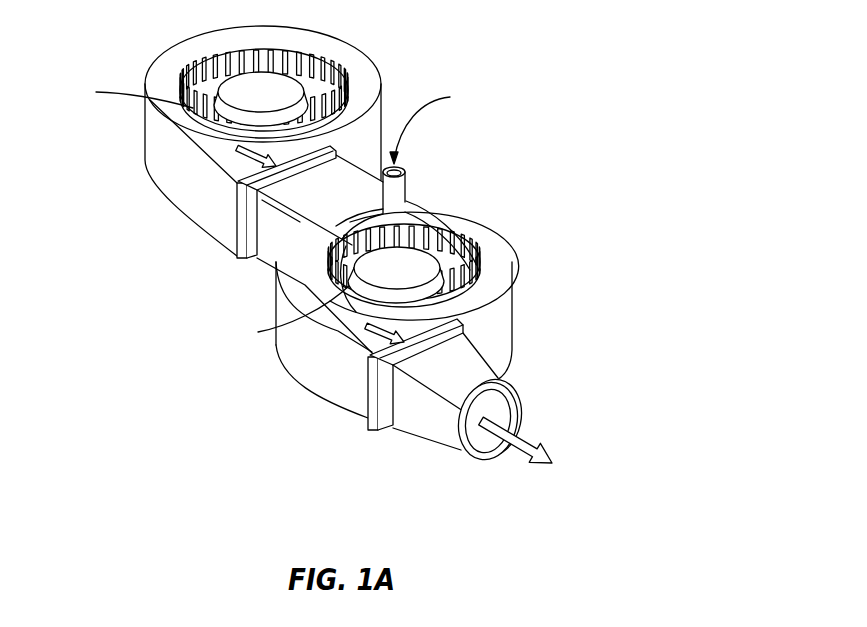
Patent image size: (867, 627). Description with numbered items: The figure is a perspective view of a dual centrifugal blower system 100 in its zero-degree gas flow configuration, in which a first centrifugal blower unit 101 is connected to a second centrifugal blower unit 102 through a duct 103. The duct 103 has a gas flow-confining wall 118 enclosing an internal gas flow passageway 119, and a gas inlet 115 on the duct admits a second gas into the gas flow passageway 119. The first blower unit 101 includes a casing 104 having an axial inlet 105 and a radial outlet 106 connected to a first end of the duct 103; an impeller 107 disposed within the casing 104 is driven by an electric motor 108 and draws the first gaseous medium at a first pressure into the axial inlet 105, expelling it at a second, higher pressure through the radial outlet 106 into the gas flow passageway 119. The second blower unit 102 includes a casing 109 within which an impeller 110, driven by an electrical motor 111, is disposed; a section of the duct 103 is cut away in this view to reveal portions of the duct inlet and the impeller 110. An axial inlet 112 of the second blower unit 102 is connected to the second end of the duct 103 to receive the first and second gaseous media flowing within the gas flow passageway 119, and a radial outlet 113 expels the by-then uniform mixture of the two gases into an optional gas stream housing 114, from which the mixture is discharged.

The dual centrifugal blower system 100 is at (362, 273).
The first centrifugal blower unit 101 is at (380, 58).
The second centrifugal blower unit 102 is at (463, 225).
The duct 103 is at (338, 207).
The casing 104 is at (193, 192).
The axial inlet 105 is at (205, 77).
The radial outlet 106 is at (233, 227).
The impeller 107 is at (317, 67).
The electric motor 108 is at (268, 80).
The casing 109 is at (323, 365).
The impeller 110 is at (413, 220).
The electrical motor 111 is at (413, 267).
The axial inlet 112 is at (447, 293).
The radial outlet 113 is at (380, 433).
The gas stream housing 114 is at (440, 430).
The gas inlet 115 is at (408, 173).
The gas flow-confining wall 118 is at (325, 220).
The gas flow passageway 119 is at (258, 332).